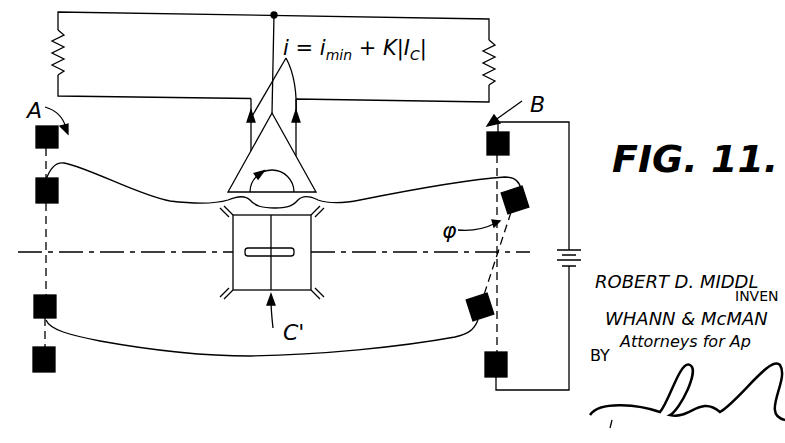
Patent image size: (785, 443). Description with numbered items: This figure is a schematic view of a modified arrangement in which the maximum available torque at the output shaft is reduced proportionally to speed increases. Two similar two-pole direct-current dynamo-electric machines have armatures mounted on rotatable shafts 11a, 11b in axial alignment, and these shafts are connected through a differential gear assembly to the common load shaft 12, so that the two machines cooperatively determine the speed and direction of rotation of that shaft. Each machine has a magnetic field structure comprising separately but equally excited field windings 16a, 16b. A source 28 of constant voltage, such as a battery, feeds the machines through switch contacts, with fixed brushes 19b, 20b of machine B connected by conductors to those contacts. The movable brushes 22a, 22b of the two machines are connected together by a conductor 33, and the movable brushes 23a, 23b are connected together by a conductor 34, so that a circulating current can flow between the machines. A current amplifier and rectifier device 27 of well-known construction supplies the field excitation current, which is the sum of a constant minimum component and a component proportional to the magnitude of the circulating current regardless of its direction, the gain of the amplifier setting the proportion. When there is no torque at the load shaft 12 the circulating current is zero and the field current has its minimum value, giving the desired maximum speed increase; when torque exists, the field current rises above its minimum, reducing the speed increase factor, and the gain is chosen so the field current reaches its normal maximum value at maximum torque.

The field winding 16a is at (63, 52).
The field winding 16b is at (493, 63).
The current amplifier and rectifier device 27 is at (247, 157).
The conductor 33 is at (349, 199).
The conductor 34 is at (294, 355).
The common load shaft 12 is at (258, 257).
The rotatable shaft 11a is at (200, 228).
The rotatable shaft 11b is at (327, 250).
The fixed brush 19b is at (509, 144).
The fixed brush 20b is at (484, 365).
The movable brush 22a is at (57, 190).
The movable brush 22b is at (521, 214).
The movable brush 23a is at (58, 304).
The movable brush 23b is at (468, 303).
The source of constant voltage 28 is at (560, 258).